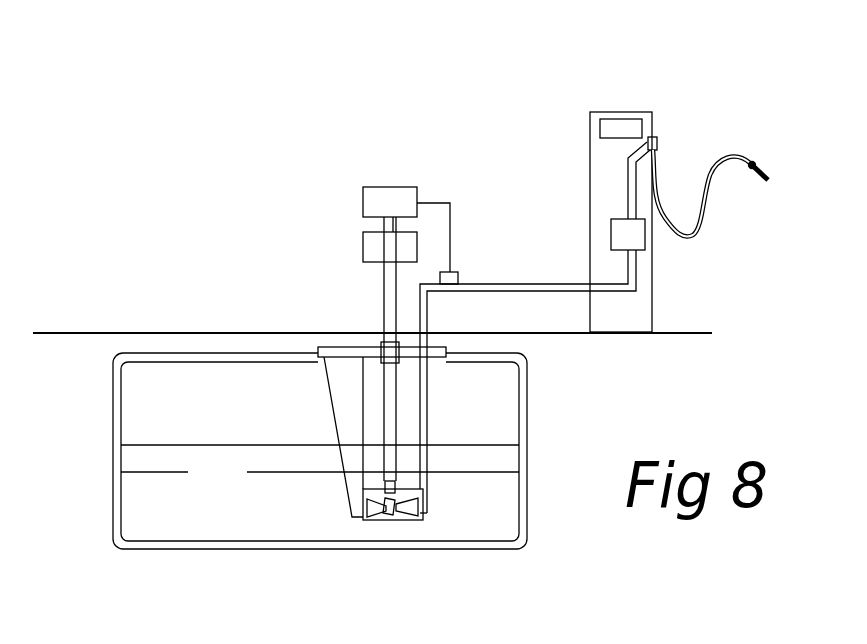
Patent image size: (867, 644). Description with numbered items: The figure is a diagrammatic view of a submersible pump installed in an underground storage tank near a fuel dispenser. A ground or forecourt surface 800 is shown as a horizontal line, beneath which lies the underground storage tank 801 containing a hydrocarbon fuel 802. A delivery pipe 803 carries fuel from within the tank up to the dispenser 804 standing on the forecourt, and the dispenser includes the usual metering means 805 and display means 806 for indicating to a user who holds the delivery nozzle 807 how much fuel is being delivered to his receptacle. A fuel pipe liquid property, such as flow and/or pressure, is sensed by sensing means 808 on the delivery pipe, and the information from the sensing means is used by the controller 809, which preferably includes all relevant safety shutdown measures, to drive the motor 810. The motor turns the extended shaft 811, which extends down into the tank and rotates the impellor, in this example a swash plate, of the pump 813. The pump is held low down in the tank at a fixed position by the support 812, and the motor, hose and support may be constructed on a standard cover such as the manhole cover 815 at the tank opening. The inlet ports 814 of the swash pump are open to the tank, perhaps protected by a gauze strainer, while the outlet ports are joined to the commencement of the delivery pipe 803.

The ground or forecourt surface 800 is at (665, 332).
The underground storage tank 801 is at (127, 398).
The hydrocarbon fuel 802 is at (320, 470).
The delivery pipe 803 is at (582, 283).
The dispenser 804 is at (618, 112).
The metering means 805 is at (598, 129).
The display means 806 is at (613, 220).
The delivery nozzle 807 is at (753, 155).
The sensing means 808 is at (453, 270).
The controller 809 is at (370, 187).
The motor 810 is at (370, 232).
The extended shaft 811 is at (384, 297).
The support 812 is at (340, 408).
The pump 813 is at (367, 520).
The inlet ports 814 is at (425, 513).
The manhole cover 815 is at (330, 345).